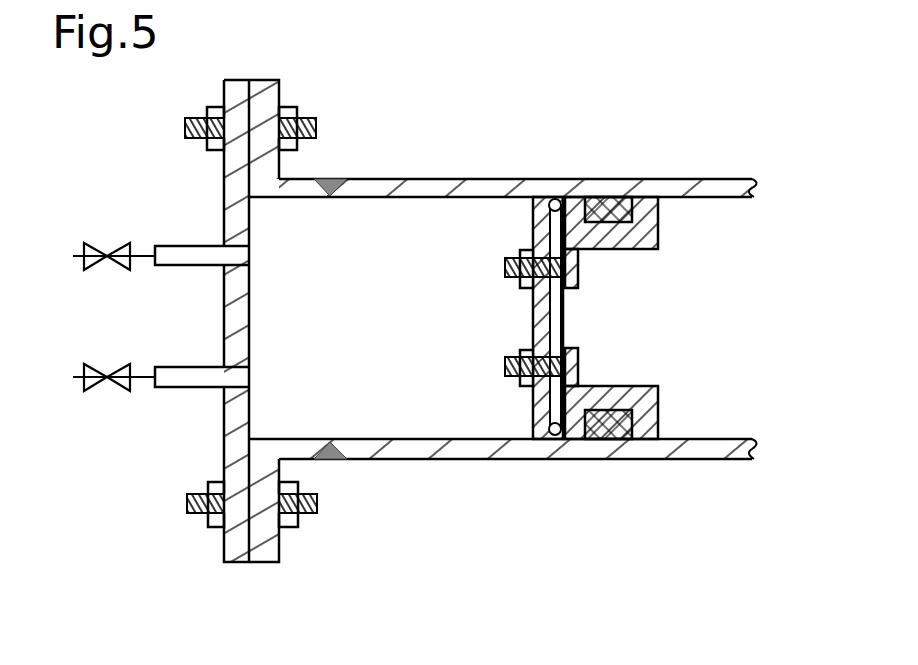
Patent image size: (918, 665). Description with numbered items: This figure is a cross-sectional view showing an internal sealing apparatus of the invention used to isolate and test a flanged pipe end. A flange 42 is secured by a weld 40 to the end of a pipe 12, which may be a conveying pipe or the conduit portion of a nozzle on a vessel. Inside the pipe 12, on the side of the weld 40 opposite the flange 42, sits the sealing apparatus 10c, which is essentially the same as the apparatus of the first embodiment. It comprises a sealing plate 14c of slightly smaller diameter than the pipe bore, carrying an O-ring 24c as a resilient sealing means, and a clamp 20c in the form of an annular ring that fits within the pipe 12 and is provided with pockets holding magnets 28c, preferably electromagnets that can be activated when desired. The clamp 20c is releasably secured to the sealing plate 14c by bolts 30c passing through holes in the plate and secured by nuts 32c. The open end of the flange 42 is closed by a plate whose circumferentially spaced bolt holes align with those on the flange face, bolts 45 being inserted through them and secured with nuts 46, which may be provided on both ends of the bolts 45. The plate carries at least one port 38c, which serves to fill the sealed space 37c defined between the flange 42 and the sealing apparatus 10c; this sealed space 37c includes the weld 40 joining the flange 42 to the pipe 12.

The pipe 12 is at (722, 178).
The flange 42 is at (265, 80).
The weld 40 is at (332, 180).
The bolts 45 is at (316, 128).
The nuts 46 is at (212, 108).
The port 38c is at (73, 378).
The sealed space 37c is at (387, 323).
The sealing apparatus 10c is at (618, 331).
The sealing plate 14c is at (532, 224).
The O-ring 24c is at (555, 198).
The clamp 20c is at (659, 218).
The magnets 28c is at (602, 205).
The nuts 32c is at (523, 287).
The bolts 30c is at (505, 268).